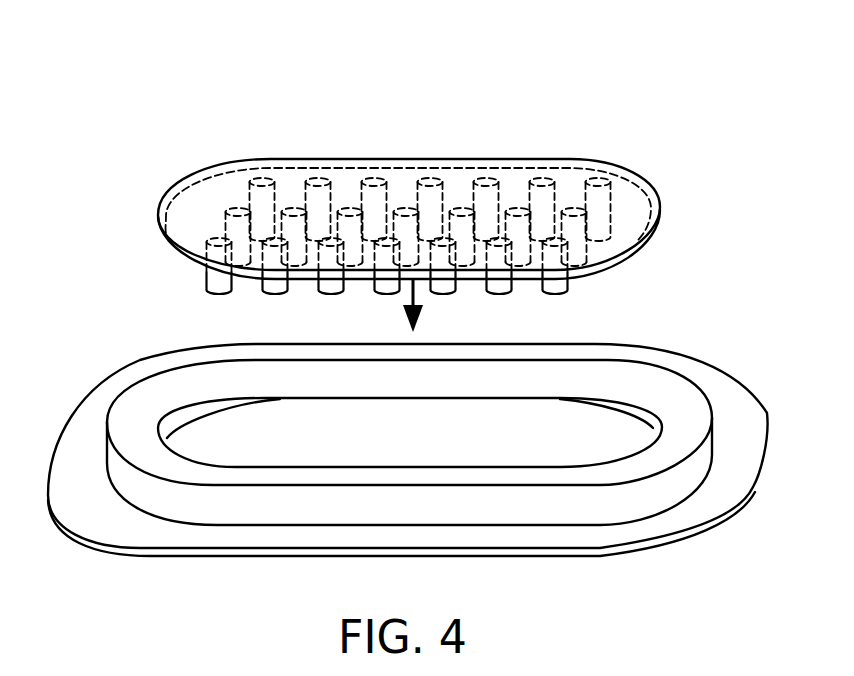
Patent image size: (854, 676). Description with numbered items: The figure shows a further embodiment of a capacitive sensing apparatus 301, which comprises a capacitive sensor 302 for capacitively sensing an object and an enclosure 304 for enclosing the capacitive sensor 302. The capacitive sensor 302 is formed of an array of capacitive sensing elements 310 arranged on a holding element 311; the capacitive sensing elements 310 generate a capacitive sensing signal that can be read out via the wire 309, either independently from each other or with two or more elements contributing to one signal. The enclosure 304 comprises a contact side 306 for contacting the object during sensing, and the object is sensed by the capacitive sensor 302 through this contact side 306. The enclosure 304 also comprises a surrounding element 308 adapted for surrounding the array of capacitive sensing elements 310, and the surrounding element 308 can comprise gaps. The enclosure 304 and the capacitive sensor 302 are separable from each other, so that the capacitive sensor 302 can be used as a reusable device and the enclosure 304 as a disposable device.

The capacitive sensing apparatus 301 is at (680, 118).
The capacitive sensor 302 is at (88, 106).
The enclosure 304 is at (747, 320).
The contact side 306 is at (732, 528).
The surrounding element 308 is at (643, 357).
The wire 309 is at (403, 193).
The capacitive sensing elements 310 is at (205, 283).
The holding element 311 is at (242, 161).